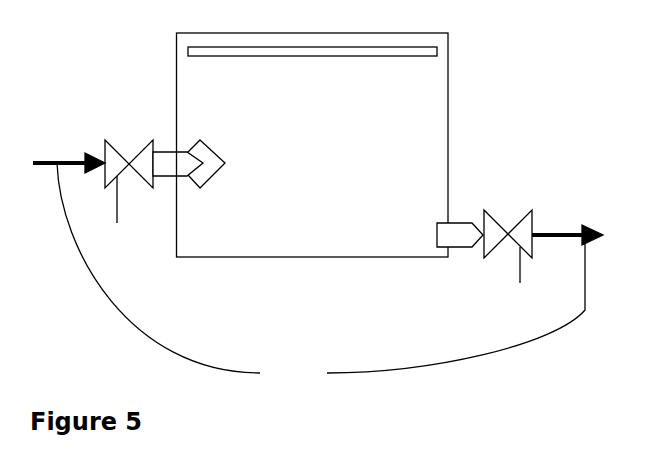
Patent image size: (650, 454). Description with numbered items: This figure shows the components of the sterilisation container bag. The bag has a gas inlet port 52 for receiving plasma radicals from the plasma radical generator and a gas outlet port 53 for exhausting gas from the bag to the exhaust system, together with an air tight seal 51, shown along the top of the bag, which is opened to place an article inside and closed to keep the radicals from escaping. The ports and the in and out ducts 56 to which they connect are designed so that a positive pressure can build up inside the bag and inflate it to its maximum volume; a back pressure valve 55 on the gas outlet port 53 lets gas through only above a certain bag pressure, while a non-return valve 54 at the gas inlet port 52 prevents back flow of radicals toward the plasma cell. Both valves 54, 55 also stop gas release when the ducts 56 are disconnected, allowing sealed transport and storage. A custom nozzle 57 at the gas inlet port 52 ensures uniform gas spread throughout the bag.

The air tight seal 51 is at (312, 57).
The gas inlet port 52 is at (172, 152).
The gas outlet port 53 is at (452, 223).
The non-return valve 54 is at (109, 215).
The back pressure valve 55 is at (533, 280).
The in and out ducts 56 is at (321, 273).
The nozzle 57 is at (227, 163).